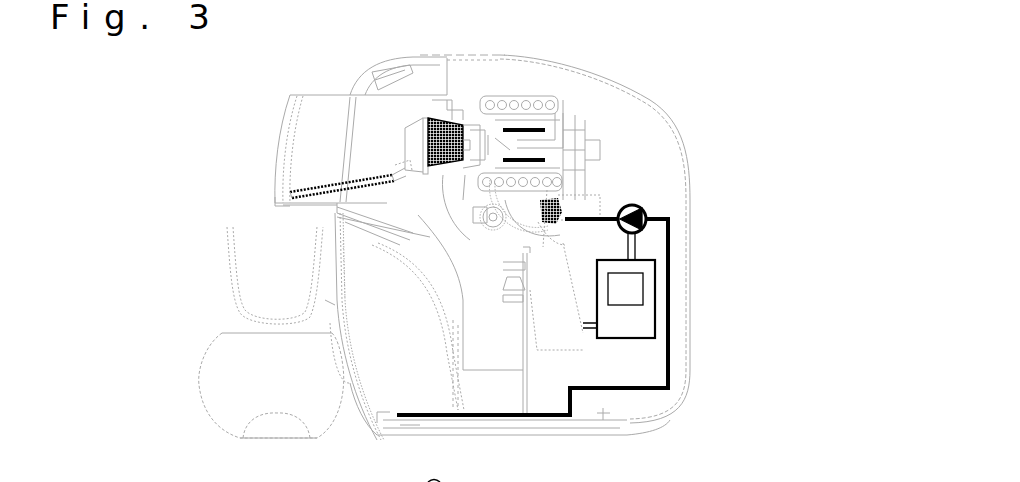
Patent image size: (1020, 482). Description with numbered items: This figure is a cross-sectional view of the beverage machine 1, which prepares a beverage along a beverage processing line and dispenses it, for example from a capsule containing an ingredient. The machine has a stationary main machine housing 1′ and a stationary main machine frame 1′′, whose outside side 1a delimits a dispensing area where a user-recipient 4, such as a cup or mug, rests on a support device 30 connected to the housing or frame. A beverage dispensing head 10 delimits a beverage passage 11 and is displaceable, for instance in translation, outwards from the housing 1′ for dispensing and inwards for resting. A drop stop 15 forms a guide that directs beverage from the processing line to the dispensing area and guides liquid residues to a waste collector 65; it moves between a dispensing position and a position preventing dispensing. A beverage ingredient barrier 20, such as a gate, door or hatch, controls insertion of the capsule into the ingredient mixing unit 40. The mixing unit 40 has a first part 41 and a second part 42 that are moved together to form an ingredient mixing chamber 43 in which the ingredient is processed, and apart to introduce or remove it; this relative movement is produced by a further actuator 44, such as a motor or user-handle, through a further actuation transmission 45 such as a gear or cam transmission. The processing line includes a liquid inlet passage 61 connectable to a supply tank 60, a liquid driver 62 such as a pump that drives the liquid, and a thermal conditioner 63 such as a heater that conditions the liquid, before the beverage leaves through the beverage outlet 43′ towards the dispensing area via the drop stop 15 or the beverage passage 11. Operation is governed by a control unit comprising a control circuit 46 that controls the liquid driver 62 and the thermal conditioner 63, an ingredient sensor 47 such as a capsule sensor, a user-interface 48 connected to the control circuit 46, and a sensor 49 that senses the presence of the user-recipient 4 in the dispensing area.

The beverage machine 1 is at (756, 44).
The stationary main machine housing 1′ is at (633, 83).
The stationary main machine frame 1′′ is at (528, 350).
The outside side 1a is at (322, 301).
The user-recipient 4 is at (250, 287).
The beverage dispensing head 10 is at (325, 93).
The beverage passage 11 is at (287, 197).
The drop stop 15 is at (338, 182).
The beverage ingredient barrier 20 is at (390, 72).
The support device 30 is at (215, 358).
The ingredient mixing unit 40 is at (453, 108).
The first part 41 is at (423, 128).
The second part 42 is at (462, 118).
The ingredient mixing chamber 43 is at (458, 142).
The beverage outlet 43′ is at (385, 165).
The further actuator 44 is at (577, 332).
The further actuation transmission 45 is at (538, 222).
The control circuit 46 is at (603, 260).
The ingredient sensor 47 is at (435, 72).
The user-interface 48 is at (277, 150).
The sensor 49 is at (340, 323).
The supply tank 60 is at (376, 294).
The liquid inlet passage 61 is at (533, 417).
The liquid driver 62 is at (634, 204).
The thermal conditioner 63 is at (557, 104).
The waste collector 65 is at (455, 280).